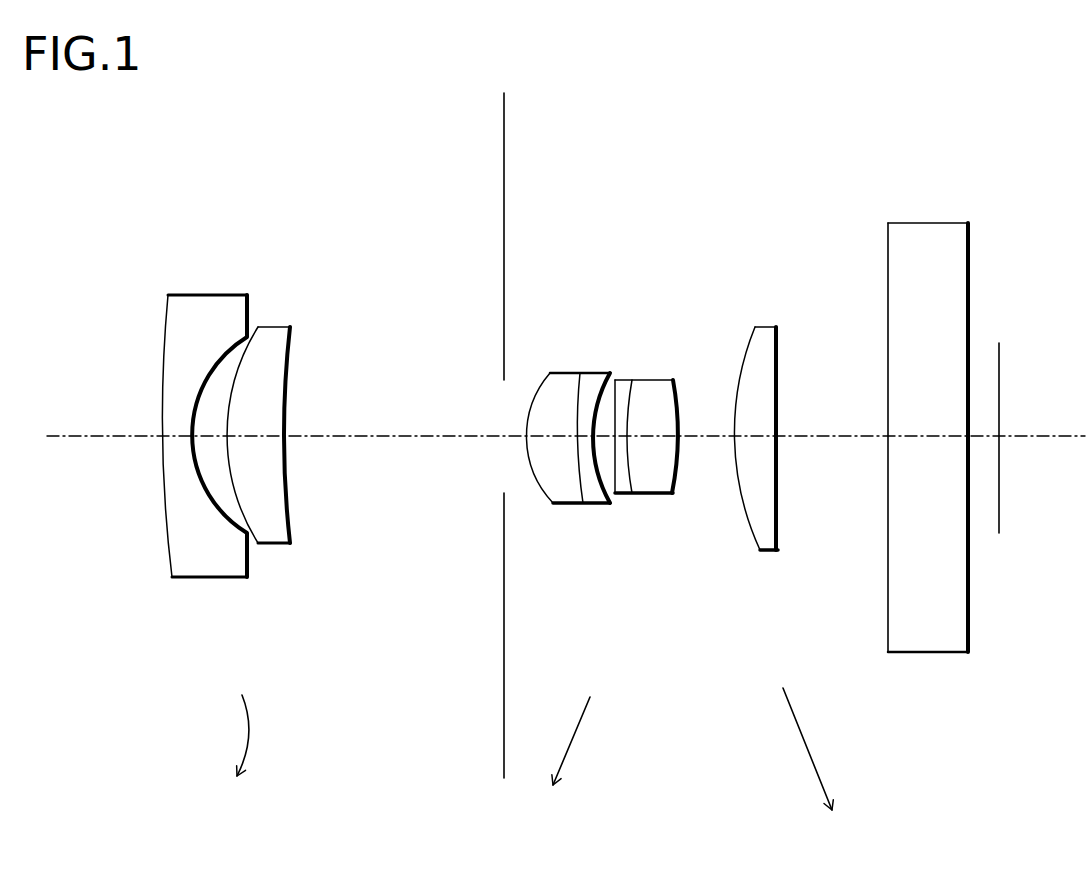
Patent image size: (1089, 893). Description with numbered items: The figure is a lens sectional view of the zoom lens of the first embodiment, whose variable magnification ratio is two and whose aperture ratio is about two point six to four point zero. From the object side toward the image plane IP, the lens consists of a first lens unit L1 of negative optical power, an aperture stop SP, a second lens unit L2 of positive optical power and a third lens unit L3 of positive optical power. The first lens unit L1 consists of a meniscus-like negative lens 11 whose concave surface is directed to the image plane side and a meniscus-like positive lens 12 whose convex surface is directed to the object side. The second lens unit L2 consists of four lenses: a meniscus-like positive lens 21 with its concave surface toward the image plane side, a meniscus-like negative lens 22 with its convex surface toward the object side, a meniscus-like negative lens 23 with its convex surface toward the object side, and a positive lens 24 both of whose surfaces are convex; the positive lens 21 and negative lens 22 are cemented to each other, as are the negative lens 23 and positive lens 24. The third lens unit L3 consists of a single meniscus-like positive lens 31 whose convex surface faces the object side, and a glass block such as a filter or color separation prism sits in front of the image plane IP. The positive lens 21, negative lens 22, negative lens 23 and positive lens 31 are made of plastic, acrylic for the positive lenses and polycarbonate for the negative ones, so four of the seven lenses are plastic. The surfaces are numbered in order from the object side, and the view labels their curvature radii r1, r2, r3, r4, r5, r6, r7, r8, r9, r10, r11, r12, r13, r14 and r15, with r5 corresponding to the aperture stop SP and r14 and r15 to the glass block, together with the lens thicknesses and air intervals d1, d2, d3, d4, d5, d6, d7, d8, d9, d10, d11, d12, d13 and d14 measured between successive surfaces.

The first lens unit L1 is at (118, 212).
The second lens unit L2 is at (515, 253).
The third lens unit L3 is at (733, 256).
The aperture stop SP is at (474, 416).
The image plane IP is at (1000, 357).
The negative lens 11 is at (172, 578).
The positive lens 12 is at (292, 545).
The positive lens 21 is at (562, 505).
The negative lens 22 is at (600, 505).
The negative lens 23 is at (625, 495).
The positive lens 24 is at (675, 497).
The positive lens 31 is at (765, 553).
The curvature radius of first surface r1 is at (166, 312).
The curvature radius of second surface r2 is at (248, 297).
The curvature radius of third surface r3 is at (255, 325).
The curvature radius of fourth surface r4 is at (292, 340).
The curvature radius of fifth surface r5 is at (503, 258).
The curvature radius of sixth surface r6 is at (545, 378).
The curvature radius of seventh surface r7 is at (572, 380).
The curvature radius of eighth surface r8 is at (612, 403).
The curvature radius of ninth surface r9 is at (617, 380).
The curvature radius of tenth surface r10 is at (640, 378).
The curvature radius of eleventh surface r11 is at (677, 383).
The curvature radius of twelfth surface r12 is at (756, 332).
The curvature radius of thirteenth surface r13 is at (778, 338).
The curvature radius of fourteenth surface r14 is at (888, 243).
The curvature radius of fifteenth surface r15 is at (968, 255).
The first lens thickness or air interval d1 is at (177, 437).
The second lens thickness or air interval d2 is at (213, 438).
The third lens thickness or air interval d3 is at (257, 438).
The fourth lens thickness or air interval d4 is at (400, 437).
The fifth lens thickness or air interval d5 is at (515, 438).
The sixth lens thickness or air interval d6 is at (548, 437).
The seventh lens thickness or air interval d7 is at (578, 437).
The eighth lens thickness or air interval d8 is at (615, 437).
The ninth lens thickness or air interval d9 is at (637, 437).
The tenth lens thickness or air interval d10 is at (653, 437).
The eleventh lens thickness or air interval d11 is at (713, 437).
The twelfth lens thickness or air interval d12 is at (755, 437).
The thirteenth lens thickness or air interval d13 is at (842, 437).
The fourteenth lens thickness or air interval d14 is at (927, 437).